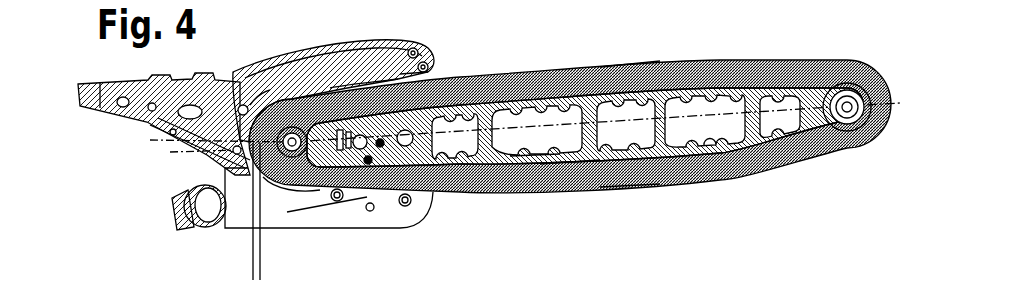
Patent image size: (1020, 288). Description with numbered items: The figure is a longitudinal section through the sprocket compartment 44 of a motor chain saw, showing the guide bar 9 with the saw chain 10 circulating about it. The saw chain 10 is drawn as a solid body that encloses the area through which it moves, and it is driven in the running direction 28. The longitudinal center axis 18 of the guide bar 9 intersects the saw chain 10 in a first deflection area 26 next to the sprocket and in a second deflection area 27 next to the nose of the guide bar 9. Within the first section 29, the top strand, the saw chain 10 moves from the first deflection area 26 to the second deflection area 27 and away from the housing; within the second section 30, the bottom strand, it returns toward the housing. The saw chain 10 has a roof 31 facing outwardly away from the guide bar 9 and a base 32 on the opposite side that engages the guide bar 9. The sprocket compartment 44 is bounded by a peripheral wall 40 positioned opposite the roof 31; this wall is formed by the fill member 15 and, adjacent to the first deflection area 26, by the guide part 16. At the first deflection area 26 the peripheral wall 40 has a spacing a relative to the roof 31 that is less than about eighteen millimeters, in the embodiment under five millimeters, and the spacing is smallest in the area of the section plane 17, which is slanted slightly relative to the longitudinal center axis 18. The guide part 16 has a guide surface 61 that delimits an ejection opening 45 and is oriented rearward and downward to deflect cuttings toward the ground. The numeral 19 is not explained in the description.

The guide bar 9 is at (727, 145).
The saw chain 10 is at (758, 55).
The fill member 15 is at (330, 80).
The guide part 16 is at (175, 210).
The section plane 17 is at (153, 143).
The longitudinal center axis 18 is at (510, 132).
The drive pulley 19 is at (290, 132).
The first deflection area 26 is at (258, 122).
The second deflection area 27 is at (887, 110).
The running direction 28 is at (585, 58).
The first section 29 is at (628, 77).
The second section 30 is at (630, 178).
The roof 31 is at (567, 187).
The base 32 is at (537, 167).
The peripheral wall 40 is at (363, 83).
The sprocket compartment 44 is at (401, 73).
The ejection opening 45 is at (236, 197).
The guide surface 61 is at (217, 150).
The spacing a is at (222, 255).